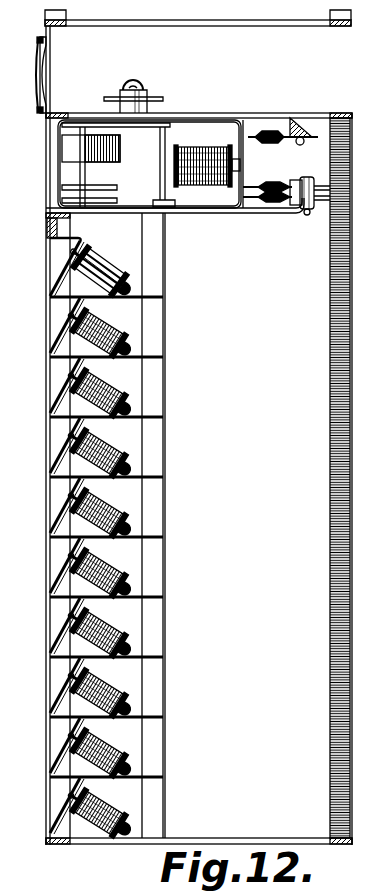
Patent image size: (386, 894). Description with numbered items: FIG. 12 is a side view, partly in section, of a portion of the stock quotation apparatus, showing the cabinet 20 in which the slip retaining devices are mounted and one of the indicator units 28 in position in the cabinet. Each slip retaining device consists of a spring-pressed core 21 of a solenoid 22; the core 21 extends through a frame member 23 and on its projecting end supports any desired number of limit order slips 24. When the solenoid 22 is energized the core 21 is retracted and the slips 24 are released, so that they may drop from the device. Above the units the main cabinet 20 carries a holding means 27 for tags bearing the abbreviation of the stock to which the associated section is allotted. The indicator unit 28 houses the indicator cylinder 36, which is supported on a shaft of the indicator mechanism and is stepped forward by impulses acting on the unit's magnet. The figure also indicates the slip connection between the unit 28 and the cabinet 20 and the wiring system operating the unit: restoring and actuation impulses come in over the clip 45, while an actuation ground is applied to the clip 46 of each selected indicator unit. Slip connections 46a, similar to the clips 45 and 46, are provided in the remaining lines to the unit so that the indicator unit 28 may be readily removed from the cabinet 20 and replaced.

The cabinet 20 is at (40, 376).
The spring-pressed core 21 is at (96, 253).
The solenoid 22 is at (106, 267).
The frame member 23 is at (130, 297).
The limit order slips 24 is at (57, 271).
The holding means 27 is at (36, 86).
The indicator unit 28 is at (46, 161).
The indicator cylinder 36 is at (120, 153).
The clip 45 is at (250, 190).
The clip 46 is at (252, 199).
The slip connections 46a is at (256, 134).